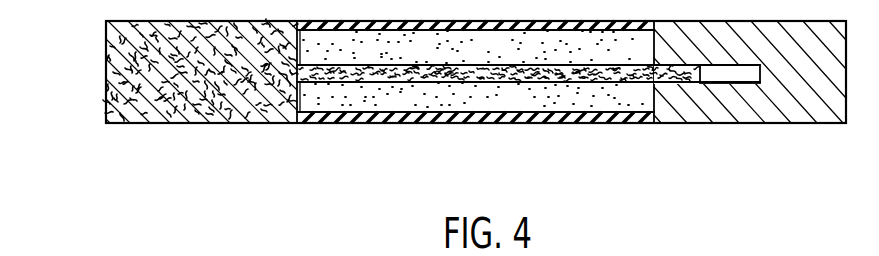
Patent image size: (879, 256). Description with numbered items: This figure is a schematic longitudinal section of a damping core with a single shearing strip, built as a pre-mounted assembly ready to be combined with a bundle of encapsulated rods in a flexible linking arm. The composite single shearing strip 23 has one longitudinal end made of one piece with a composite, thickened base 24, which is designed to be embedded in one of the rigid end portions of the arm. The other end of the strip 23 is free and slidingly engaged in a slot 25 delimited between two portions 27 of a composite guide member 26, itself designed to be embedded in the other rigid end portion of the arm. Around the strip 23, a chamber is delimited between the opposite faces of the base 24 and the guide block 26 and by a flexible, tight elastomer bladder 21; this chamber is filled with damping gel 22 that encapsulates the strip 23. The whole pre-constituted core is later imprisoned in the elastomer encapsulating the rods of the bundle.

The elastomer bladder 21 is at (362, 117).
The damping gel 22 is at (419, 95).
The single shearing strip 23 is at (505, 70).
The thickened base 24 is at (233, 87).
The slot 25 is at (740, 76).
The guide member 26 is at (795, 105).
The portions of the guide member 27 is at (680, 47).